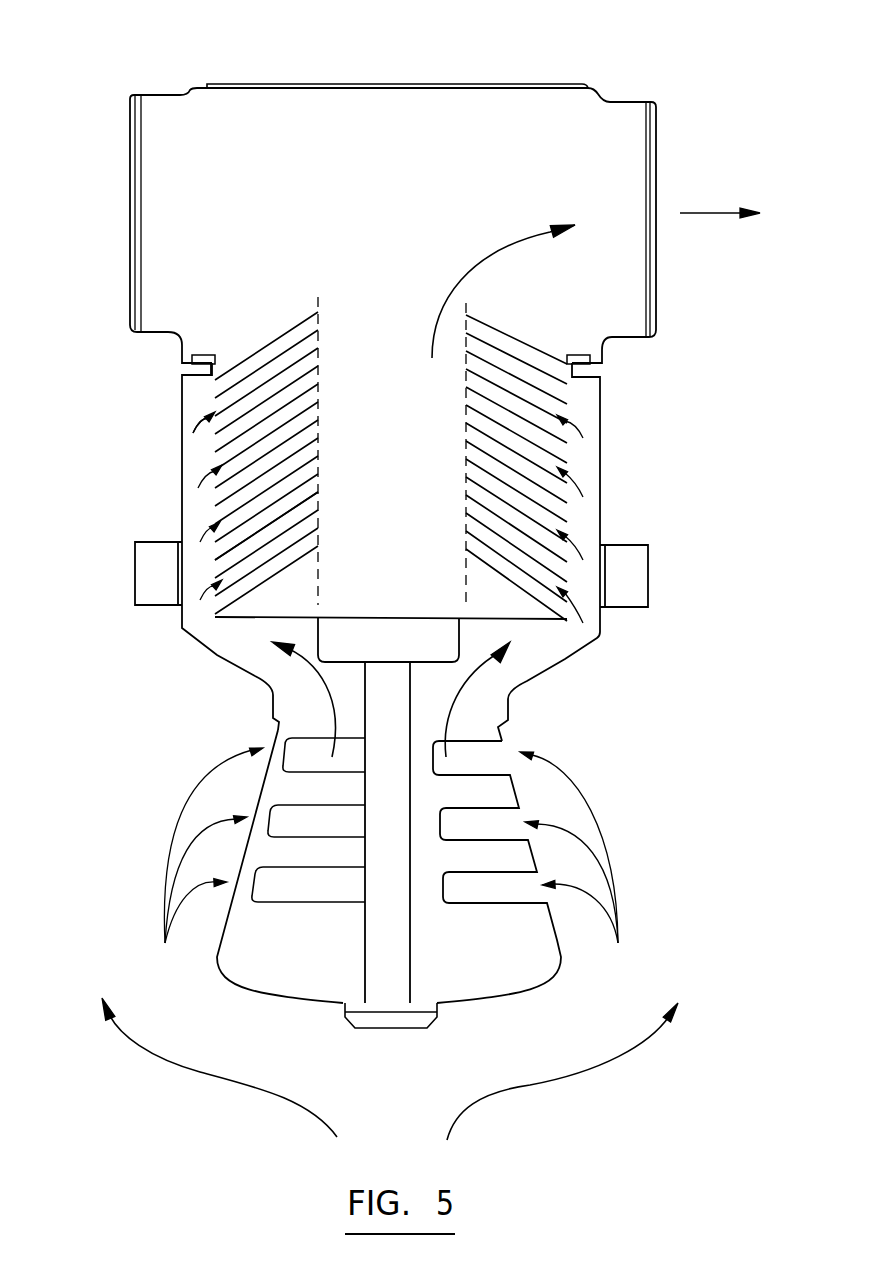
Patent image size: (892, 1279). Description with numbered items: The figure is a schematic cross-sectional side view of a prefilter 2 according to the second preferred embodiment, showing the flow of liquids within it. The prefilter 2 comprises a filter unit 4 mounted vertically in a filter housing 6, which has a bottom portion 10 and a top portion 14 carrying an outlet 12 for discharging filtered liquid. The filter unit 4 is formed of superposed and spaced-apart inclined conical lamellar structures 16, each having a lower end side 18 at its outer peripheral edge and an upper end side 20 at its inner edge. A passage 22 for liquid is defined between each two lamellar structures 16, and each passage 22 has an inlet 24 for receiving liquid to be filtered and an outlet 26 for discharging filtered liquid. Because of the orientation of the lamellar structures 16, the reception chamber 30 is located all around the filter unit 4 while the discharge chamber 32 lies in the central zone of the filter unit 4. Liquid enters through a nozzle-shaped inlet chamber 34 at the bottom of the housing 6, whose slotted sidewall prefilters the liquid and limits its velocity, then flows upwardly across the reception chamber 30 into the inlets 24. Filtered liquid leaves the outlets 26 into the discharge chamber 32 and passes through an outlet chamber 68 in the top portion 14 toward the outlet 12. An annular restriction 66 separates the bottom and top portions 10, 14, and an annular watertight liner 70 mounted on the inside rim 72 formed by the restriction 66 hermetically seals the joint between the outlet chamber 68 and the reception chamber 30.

The prefilter 2 is at (104, 65).
The filter unit 4 is at (512, 333).
The filter housing 6 is at (150, 308).
The bottom portion 10 is at (603, 453).
The outlet 12 is at (657, 145).
The top portion 14 is at (130, 205).
The lamellar structures 16 is at (290, 408).
The lower end side 18 is at (565, 560).
The upper end side 20 is at (470, 480).
The passage 22 is at (230, 449).
The inlet 24 is at (203, 563).
The outlet 26 is at (334, 507).
The reception chamber 30 is at (181, 524).
The discharge chamber 32 is at (378, 452).
The inlet chamber 34 is at (490, 795).
The annular restriction 66 is at (597, 376).
The outlet chamber 68 is at (383, 190).
The annular watertight liner 70 is at (201, 355).
The inside rim 72 is at (183, 375).